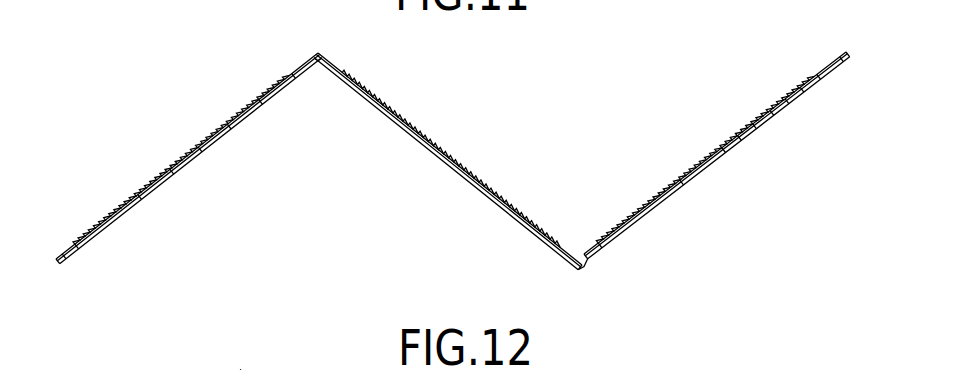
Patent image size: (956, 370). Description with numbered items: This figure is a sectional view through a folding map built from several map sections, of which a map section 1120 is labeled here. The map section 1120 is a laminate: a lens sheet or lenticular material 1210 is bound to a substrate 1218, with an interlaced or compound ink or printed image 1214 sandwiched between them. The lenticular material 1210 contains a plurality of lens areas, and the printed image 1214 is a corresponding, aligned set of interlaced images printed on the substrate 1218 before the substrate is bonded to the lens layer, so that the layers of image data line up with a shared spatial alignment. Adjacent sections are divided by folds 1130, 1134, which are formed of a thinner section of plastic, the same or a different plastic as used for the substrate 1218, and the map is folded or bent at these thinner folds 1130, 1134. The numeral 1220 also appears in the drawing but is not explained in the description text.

The map section 1120 is at (99, 203).
The lens sheet or lenticular material 1210 is at (190, 152).
The interlaced or compound ink or printed image 1214 is at (233, 123).
The substrate 1218 is at (172, 175).
The fold 1130 is at (318, 53).
The fold 1134 is at (584, 268).
The cutting strip 1220 is at (243, 367).